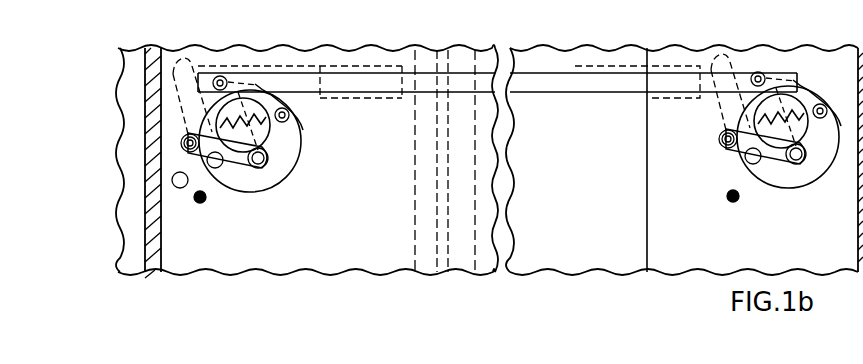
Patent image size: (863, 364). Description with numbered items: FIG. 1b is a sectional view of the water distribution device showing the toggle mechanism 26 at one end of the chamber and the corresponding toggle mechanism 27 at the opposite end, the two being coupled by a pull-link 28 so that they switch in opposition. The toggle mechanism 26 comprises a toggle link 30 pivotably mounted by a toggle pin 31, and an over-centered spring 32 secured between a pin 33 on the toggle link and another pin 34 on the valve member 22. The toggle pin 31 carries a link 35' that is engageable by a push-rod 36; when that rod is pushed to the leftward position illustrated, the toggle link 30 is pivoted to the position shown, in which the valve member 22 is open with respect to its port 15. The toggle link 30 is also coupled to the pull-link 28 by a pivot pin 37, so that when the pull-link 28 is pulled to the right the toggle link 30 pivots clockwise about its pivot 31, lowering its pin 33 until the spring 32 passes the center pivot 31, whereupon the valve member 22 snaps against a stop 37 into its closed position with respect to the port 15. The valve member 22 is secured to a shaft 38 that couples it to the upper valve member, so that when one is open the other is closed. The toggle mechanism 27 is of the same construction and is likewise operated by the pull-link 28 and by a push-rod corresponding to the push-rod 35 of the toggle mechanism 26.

The port 15 is at (183, 188).
The valve member 22 is at (262, 182).
The toggle mechanism 26 is at (201, 131).
The toggle mechanism 27 is at (795, 196).
The pull-link 28 is at (379, 83).
The toggle link 30 is at (284, 172).
The toggle pin 31 is at (207, 161).
The over-centered spring 32 is at (257, 84).
The pin 33 is at (290, 115).
The pin 34 is at (181, 143).
The push-rod 35 is at (300, 62).
The link 35' is at (186, 79).
The push-rod 36 is at (220, 75).
The pivot pin 37 is at (204, 203).
The shaft 38 is at (268, 160).